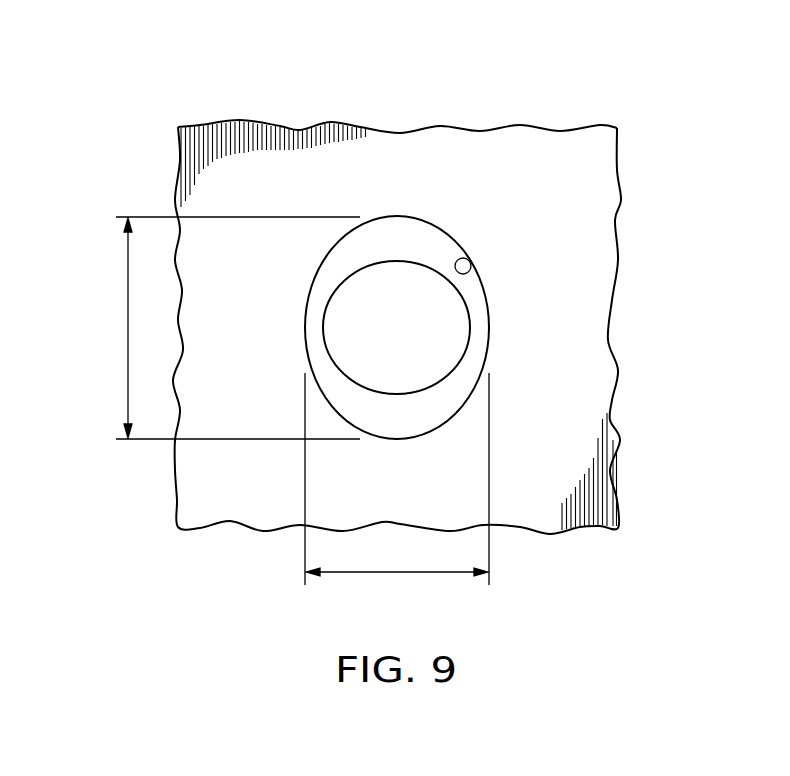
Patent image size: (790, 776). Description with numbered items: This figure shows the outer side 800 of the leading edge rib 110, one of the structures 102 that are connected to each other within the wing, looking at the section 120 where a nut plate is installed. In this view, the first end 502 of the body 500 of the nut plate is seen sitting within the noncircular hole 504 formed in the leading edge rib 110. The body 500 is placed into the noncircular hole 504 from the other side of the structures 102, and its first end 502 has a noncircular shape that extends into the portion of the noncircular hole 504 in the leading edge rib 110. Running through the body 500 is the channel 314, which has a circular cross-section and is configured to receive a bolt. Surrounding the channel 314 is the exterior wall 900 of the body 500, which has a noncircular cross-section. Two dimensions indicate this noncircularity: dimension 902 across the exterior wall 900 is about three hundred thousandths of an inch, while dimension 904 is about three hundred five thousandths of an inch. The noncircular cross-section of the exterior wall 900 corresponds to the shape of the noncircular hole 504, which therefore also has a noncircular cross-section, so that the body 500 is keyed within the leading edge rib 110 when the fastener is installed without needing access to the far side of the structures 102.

The structures 102 is at (270, 88).
The leading edge rib 110 is at (622, 183).
The section 120 is at (522, 110).
The outer side 800 is at (397, 136).
The exterior wall 900 is at (397, 216).
The body 500 is at (305, 328).
The first end 502 is at (397, 440).
The noncircular hole 504 is at (470, 271).
The channel 314 is at (420, 343).
The dimension 902 is at (397, 572).
The dimension 904 is at (128, 328).